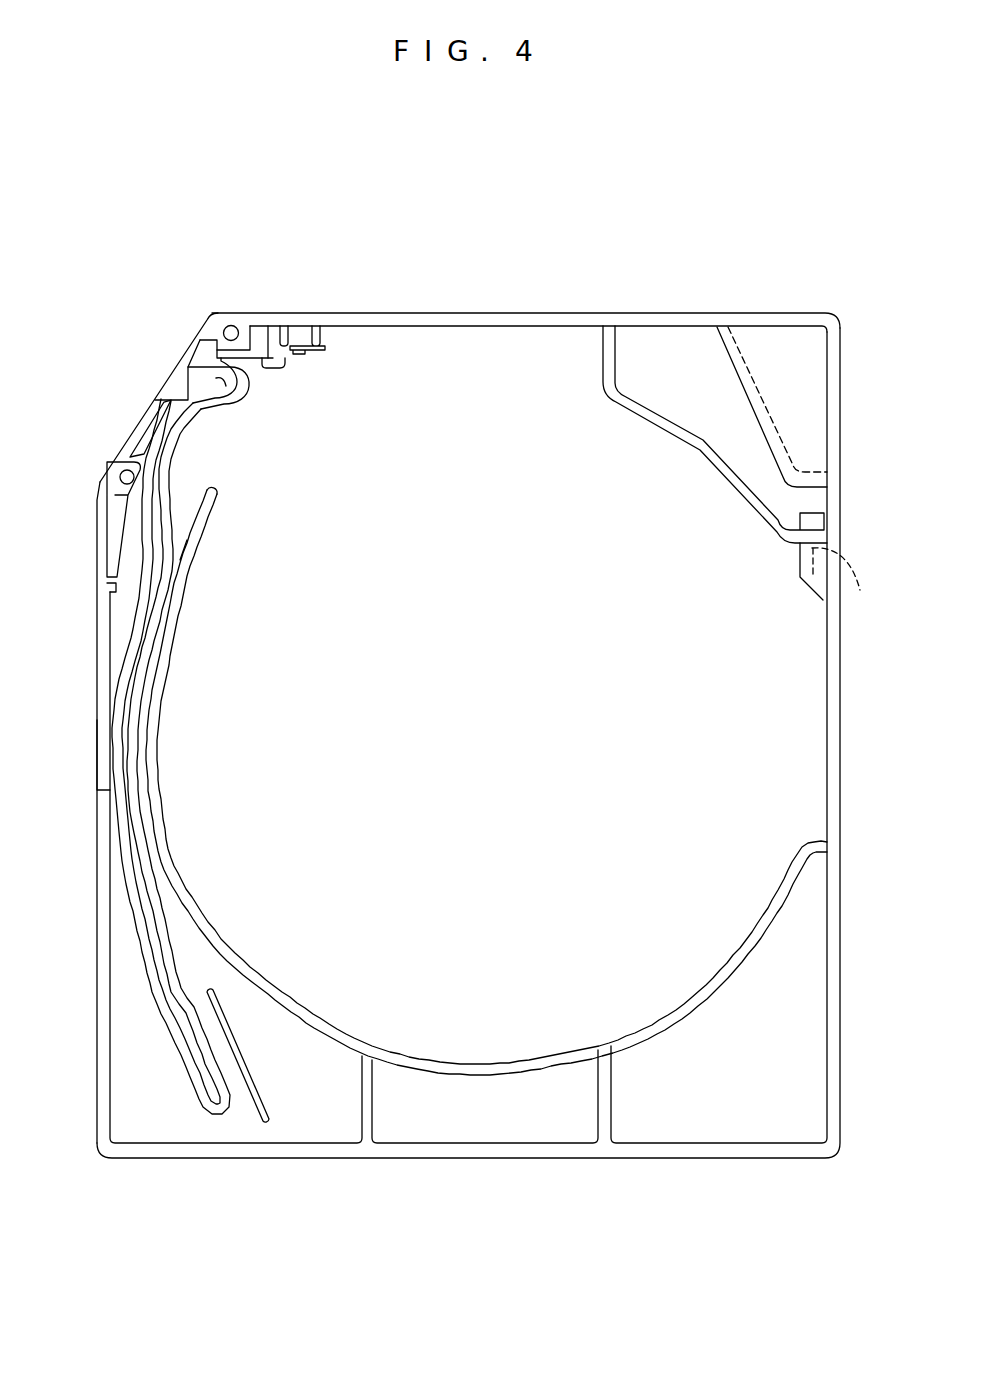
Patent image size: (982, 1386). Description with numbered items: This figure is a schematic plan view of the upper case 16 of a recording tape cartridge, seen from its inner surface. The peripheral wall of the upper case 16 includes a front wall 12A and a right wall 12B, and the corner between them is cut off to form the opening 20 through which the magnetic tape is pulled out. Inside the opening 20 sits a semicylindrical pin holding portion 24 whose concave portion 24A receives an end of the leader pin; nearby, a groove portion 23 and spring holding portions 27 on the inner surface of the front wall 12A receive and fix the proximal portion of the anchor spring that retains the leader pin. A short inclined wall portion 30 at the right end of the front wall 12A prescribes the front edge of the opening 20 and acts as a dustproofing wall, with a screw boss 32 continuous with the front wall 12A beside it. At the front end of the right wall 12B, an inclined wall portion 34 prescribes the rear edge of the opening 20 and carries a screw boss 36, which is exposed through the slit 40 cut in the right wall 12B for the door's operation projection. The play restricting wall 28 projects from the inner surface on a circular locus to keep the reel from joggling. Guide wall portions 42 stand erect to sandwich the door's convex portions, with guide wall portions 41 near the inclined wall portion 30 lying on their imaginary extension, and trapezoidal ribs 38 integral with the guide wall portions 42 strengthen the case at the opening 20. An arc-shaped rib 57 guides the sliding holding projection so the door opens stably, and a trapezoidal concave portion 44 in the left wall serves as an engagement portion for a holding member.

The upper case 16 is at (598, 137).
The front wall 12A is at (520, 313).
The right wall 12B is at (99, 808).
The opening 20 is at (182, 397).
The groove portion 23 is at (267, 352).
The pin holding portion 24 is at (236, 411).
The concave portion 24A is at (247, 390).
The spring holding portion 27 is at (313, 348).
The play restricting wall 28 is at (477, 700).
The inclined wall portion 30 is at (217, 309).
The screw boss 32 is at (234, 326).
The inclined wall portion 34 is at (127, 540).
The screw boss 36 is at (109, 460).
The rib 38 is at (137, 425).
The slit 40 is at (100, 718).
The guide wall portion 41 is at (185, 345).
The guide wall portion 42 is at (168, 1030).
The concave portion 44 is at (845, 582).
The rib 57 is at (263, 1093).